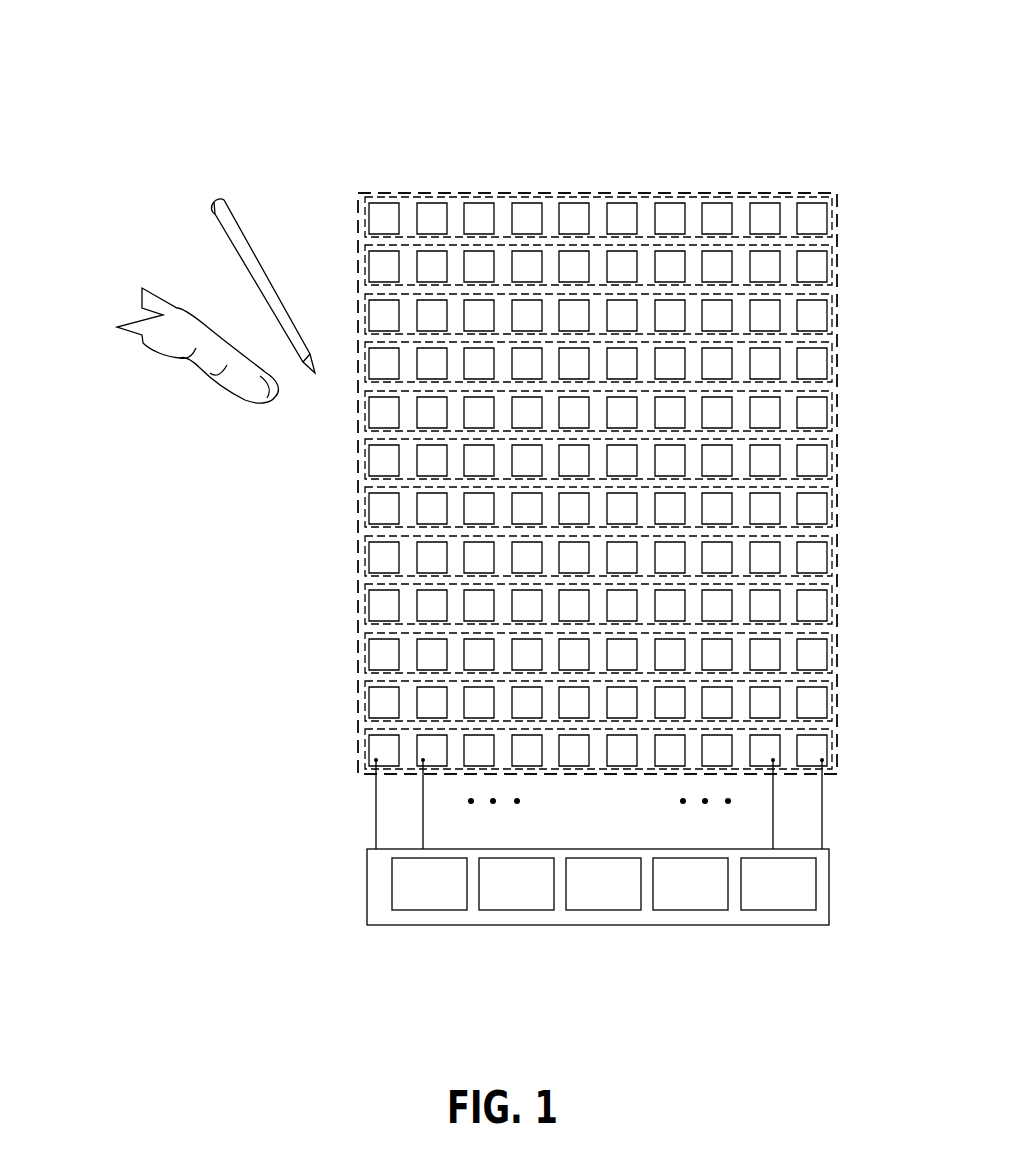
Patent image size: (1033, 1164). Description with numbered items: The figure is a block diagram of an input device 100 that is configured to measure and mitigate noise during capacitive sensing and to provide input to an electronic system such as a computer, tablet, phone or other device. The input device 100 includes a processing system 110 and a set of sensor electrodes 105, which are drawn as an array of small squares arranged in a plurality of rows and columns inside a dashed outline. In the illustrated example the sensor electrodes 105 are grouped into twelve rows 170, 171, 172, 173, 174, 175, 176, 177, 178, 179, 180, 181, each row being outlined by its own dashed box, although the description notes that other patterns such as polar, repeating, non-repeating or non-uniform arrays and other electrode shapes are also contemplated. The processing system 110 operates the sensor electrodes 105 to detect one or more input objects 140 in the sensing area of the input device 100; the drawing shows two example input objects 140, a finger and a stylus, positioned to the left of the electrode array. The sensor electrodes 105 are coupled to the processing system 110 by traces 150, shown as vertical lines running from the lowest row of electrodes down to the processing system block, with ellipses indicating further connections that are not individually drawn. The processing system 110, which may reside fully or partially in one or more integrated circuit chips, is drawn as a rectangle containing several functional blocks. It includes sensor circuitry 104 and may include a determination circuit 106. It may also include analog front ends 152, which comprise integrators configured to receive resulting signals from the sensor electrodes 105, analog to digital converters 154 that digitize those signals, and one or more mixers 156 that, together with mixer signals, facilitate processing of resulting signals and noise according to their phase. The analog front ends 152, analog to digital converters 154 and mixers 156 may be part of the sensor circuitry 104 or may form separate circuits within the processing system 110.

The input device 100 is at (126, 60).
The sensor electrodes 105 is at (494, 192).
The input objects 140 is at (177, 307).
The row 170 is at (828, 218).
The row 171 is at (828, 266).
The row 172 is at (828, 315).
The row 173 is at (828, 363).
The row 174 is at (828, 412).
The row 175 is at (828, 460).
The row 176 is at (828, 508).
The row 177 is at (828, 557).
The row 178 is at (828, 605).
The row 179 is at (828, 654).
The row 180 is at (828, 702).
The row 181 is at (828, 750).
The traces 150 is at (822, 803).
The processing system 110 is at (829, 887).
The sensor circuitry 104 is at (450, 897).
The analog front ends 152 is at (537, 897).
The analog to digital converters 154 is at (624, 897).
The mixers 156 is at (711, 897).
The determination circuit 106 is at (799, 897).